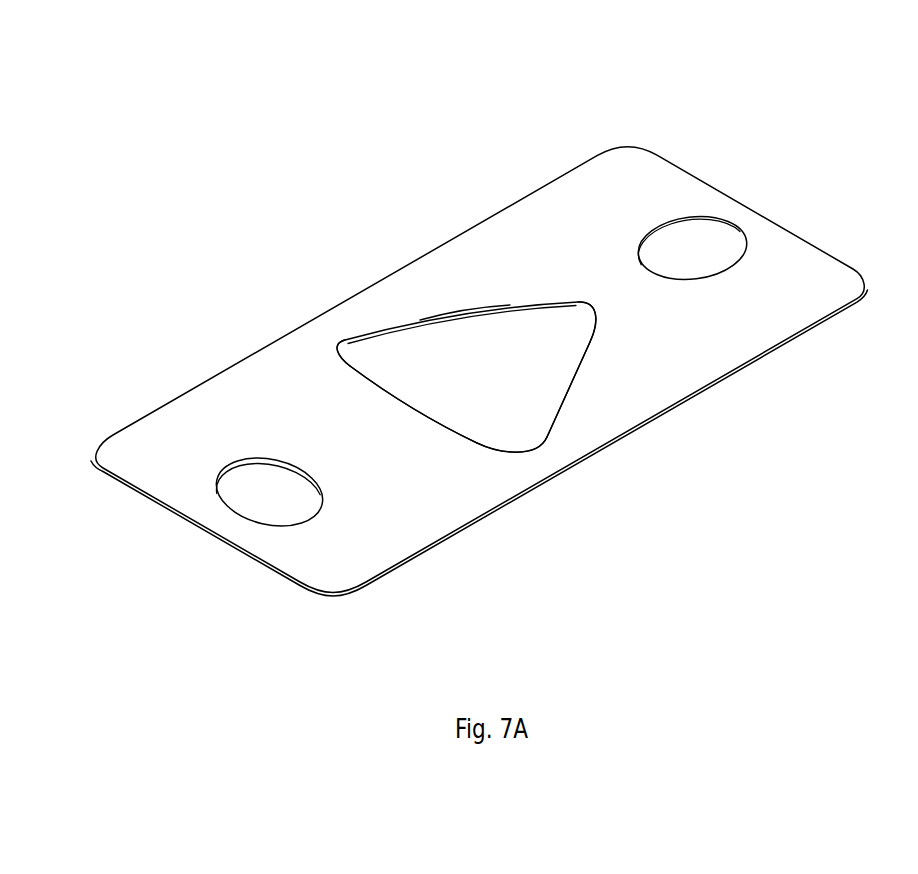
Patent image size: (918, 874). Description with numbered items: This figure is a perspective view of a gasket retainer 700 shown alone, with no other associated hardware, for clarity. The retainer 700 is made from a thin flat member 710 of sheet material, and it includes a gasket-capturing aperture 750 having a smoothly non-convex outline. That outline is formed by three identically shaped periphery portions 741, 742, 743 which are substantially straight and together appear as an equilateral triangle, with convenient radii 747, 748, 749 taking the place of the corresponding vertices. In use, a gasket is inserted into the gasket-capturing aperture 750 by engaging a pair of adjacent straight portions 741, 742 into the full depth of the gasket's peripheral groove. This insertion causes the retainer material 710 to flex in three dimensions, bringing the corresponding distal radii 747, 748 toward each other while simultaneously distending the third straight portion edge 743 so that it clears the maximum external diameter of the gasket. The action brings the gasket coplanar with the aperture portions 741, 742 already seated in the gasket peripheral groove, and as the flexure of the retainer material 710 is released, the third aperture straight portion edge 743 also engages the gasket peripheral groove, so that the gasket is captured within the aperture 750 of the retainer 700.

The retainer 700 is at (527, 180).
The thin flat member 710 is at (142, 458).
The straight periphery portion 741 is at (417, 413).
The straight periphery portion 742 is at (573, 384).
The third straight portion edge 743 is at (467, 313).
The radius 747 is at (338, 342).
The radius 748 is at (594, 321).
The radius 749 is at (523, 450).
The gasket-capturing aperture 750 is at (492, 382).